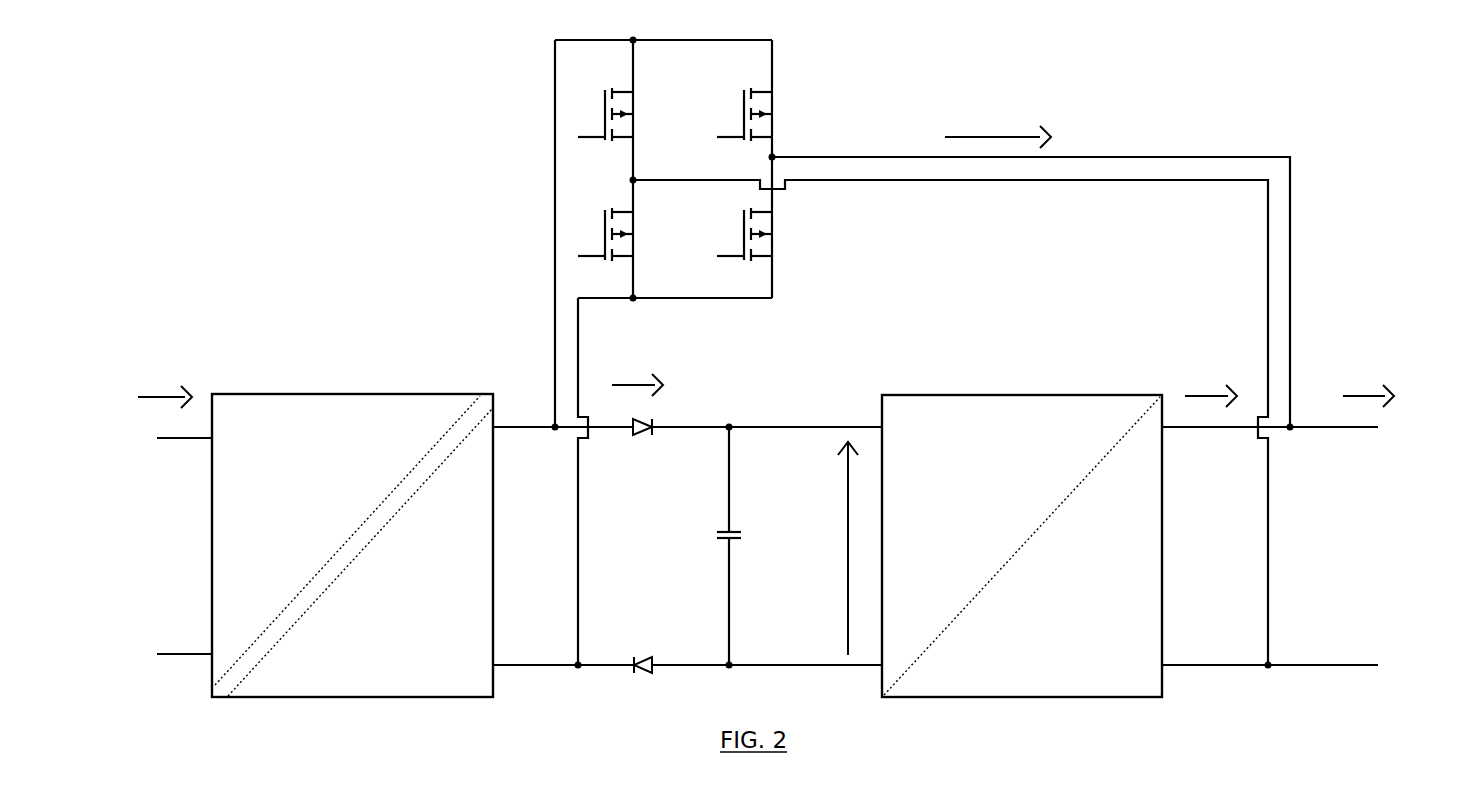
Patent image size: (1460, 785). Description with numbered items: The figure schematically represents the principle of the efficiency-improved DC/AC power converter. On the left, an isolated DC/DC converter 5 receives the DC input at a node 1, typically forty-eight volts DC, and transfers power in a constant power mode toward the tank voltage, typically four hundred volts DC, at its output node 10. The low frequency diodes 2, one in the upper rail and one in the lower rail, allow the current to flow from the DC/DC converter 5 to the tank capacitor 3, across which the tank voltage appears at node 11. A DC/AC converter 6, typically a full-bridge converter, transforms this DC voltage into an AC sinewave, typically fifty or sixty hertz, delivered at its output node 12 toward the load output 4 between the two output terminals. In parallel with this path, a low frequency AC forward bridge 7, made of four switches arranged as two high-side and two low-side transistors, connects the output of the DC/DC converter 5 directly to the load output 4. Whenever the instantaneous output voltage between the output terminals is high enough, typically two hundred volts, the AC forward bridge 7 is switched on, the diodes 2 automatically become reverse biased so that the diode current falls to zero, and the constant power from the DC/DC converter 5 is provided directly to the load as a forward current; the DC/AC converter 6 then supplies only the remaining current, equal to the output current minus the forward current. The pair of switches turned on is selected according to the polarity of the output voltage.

The DC input 1 is at (178, 521).
The isolated DC/DC converter 5 is at (361, 388).
The rectified DC node (KRL/AR) 10 is at (507, 478).
The low frequency diodes 2 is at (637, 463).
The tank capacitor 3 is at (762, 567).
The tank voltage node 11 is at (867, 468).
The AC forward bridge 7 is at (712, 338).
The DC/AC converter 6 is at (1024, 387).
The AC output node 12 is at (1188, 470).
The AC output 4 is at (1293, 544).